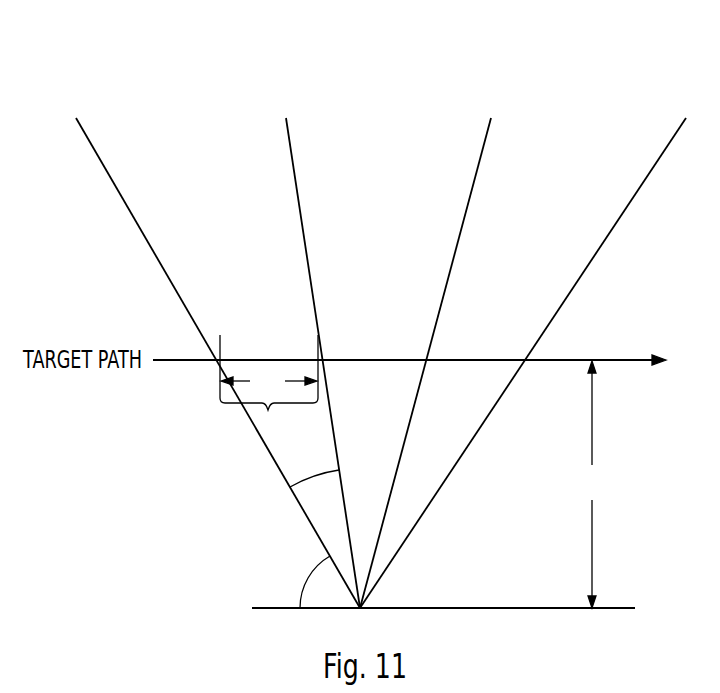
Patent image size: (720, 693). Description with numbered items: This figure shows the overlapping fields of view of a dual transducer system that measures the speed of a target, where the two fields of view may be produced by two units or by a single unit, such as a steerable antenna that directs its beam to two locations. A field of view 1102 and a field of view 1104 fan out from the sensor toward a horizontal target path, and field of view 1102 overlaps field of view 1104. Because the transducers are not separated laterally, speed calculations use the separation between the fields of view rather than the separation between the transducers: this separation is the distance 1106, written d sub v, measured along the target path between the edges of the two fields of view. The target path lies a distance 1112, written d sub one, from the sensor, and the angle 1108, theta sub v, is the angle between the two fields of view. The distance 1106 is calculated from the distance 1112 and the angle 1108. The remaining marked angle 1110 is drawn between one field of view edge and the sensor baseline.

The field of view 1102 is at (491, 118).
The field of view 1104 is at (288, 98).
The distance 1106 is at (266, 412).
The angle 1108 is at (282, 468).
The angle theta_1 between field of view edge and baseline 1110 is at (297, 598).
The distance 1112 is at (616, 362).